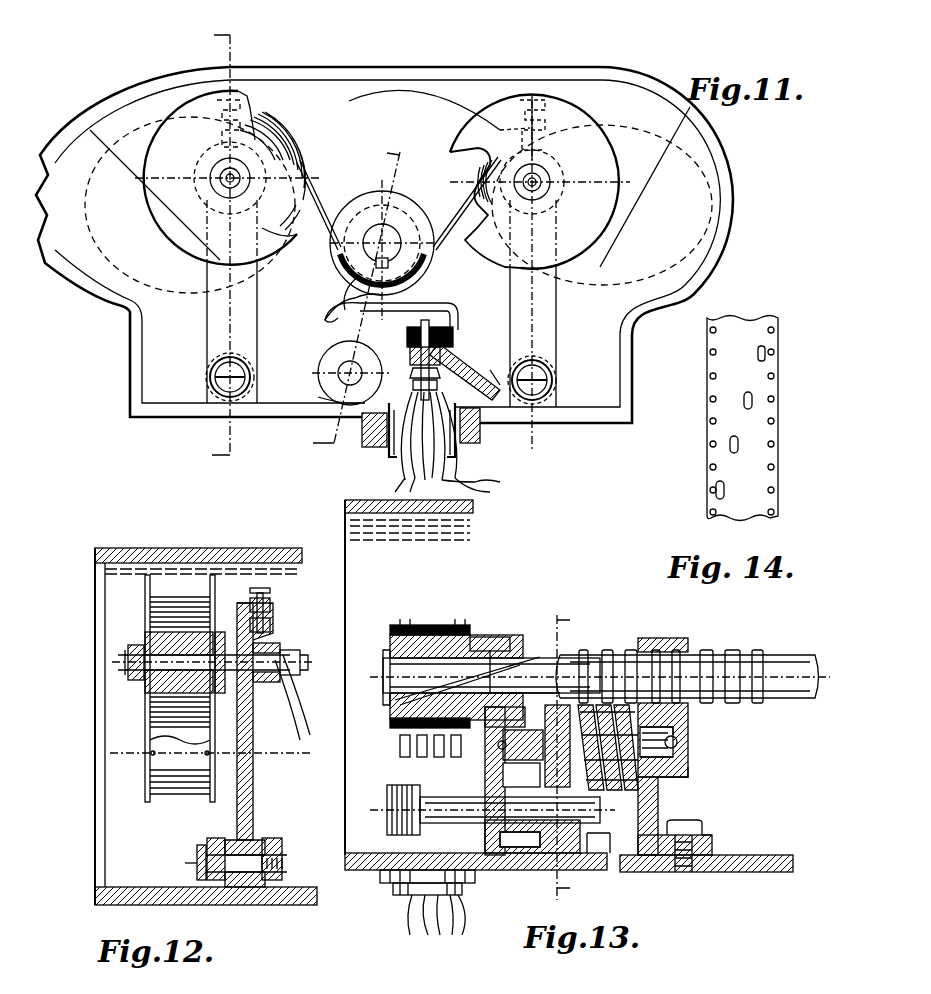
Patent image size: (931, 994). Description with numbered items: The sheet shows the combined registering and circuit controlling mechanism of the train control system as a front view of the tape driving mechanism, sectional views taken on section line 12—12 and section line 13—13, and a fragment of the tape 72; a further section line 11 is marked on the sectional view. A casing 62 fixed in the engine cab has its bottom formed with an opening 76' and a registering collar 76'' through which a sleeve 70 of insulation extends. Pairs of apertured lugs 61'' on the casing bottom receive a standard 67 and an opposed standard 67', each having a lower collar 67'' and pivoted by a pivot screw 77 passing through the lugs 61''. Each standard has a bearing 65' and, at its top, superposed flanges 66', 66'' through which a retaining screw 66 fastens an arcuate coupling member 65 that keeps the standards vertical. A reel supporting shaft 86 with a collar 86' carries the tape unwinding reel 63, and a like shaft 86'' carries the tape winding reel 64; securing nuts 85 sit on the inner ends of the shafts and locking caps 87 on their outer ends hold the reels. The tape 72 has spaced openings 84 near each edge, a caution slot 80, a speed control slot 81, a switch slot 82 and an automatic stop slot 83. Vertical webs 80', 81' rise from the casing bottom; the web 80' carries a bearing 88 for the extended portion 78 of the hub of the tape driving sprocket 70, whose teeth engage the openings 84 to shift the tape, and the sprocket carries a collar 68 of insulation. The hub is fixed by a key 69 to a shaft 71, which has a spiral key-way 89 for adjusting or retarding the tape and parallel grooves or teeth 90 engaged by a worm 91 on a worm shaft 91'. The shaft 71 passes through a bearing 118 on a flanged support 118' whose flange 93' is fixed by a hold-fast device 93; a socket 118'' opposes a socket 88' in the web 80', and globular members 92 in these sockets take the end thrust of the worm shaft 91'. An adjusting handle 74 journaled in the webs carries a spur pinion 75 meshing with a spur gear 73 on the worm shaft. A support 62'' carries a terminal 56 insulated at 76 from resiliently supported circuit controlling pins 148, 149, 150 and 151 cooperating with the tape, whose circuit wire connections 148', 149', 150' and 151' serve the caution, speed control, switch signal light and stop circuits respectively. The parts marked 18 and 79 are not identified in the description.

In FIG. 13, the section line 11- 11 is at (574, 755).
In FIG. 11, the section line 12— 12 is at (209, 245).
In FIG. 11, the section line 13— 13 is at (346, 297).
In FIG. 13, the drive shaft 18 is at (383, 680).
In FIG. 11, the terminal 56 is at (468, 372).
In FIG. 11, the apertured lugs 61'' is at (406, 378).
In FIG. 12, the apertured lugs 61'' is at (268, 842).
In FIG. 11, the casing 62 is at (384, 250).
In FIG. 12, the casing 62 is at (206, 705).
In FIG. 13, the casing 62 is at (576, 686).
In FIG. 11, the support 62'' is at (519, 350).
In FIG. 11, the tape unwinding reel 63 is at (190, 115).
In FIG. 12, the tape unwinding reel 63 is at (145, 583).
In FIG. 11, the tape winding reel 64 is at (600, 120).
In FIG. 11, the arcuate shaped coupling member 65 is at (439, 83).
In FIG. 12, the arcuate shaped coupling member 65 is at (224, 640).
In FIG. 12, the bearing 65' is at (282, 681).
In FIG. 11, the retaining screw 66 is at (556, 99).
In FIG. 12, the retaining screw 66 is at (284, 599).
In FIG. 12, the flange 66' is at (286, 598).
In FIG. 12, the flange 66'' is at (244, 604).
In FIG. 11, the standard 67 is at (251, 332).
In FIG. 12, the standard 67 is at (285, 814).
In FIG. 11, the standard 67' is at (560, 336).
In FIG. 12, the collar 67'' is at (245, 901).
In FIG. 11, the collar of insulation 68 is at (358, 196).
In FIG. 13, the collar of insulation 68 is at (392, 625).
In FIG. 11, the key 69 is at (425, 235).
In FIG. 13, the key 69 is at (390, 708).
In FIG. 11, the tape driving sprocket 70 is at (435, 292).
In FIG. 13, the tape driving sprocket 70 is at (420, 625).
In FIG. 11, the shaft 71 is at (398, 228).
In FIG. 13, the shaft 71 is at (536, 650).
In FIG. 11, the tape 72 is at (485, 175).
In FIG. 14, the tape 72 is at (742, 325).
In FIG. 12, the tape 72 is at (178, 603).
In FIG. 11, the spur gear 73 is at (340, 306).
In FIG. 13, the spur gear 73 is at (548, 768).
In FIG. 11, the adjusting handle 74 is at (330, 362).
In FIG. 13, the adjusting handle 74 is at (385, 808).
In FIG. 11, the spur pinion 75 is at (305, 410).
In FIG. 13, the spur pinion 75 is at (540, 842).
In FIG. 11, the insulation 76 is at (458, 399).
In FIG. 13, the insulation 76 is at (419, 907).
In FIG. 11, the opening 76' is at (371, 445).
In FIG. 11, the collar 76'' is at (495, 429).
In FIG. 11, the pivot screw 77 is at (214, 370).
In FIG. 12, the pivot screw 77 is at (198, 858).
In FIG. 13, the pivot screw 77 is at (388, 650).
In FIG. 13, the extended portion of hub 78 is at (510, 635).
In FIG. 11, the reel hub 79 is at (217, 175).
In FIG. 14, the caution slot 80 is at (791, 351).
In FIG. 13, the vertical web 80' is at (498, 767).
In FIG. 14, the speed control slot 81 is at (784, 395).
In FIG. 13, the vertical web 81' is at (602, 841).
In FIG. 14, the switch slot 82 is at (740, 444).
In FIG. 14, the automatic stop slot 83 is at (726, 490).
In FIG. 14, the spaced openings 84 is at (708, 352).
In FIG. 12, the securing nuts 85 is at (292, 660).
In FIG. 12, the reel supporting shaft 86 is at (260, 721).
In FIG. 12, the collar 86' is at (221, 648).
In FIG. 11, the reel supporting shaft 86'' is at (426, 171).
In FIG. 12, the locking cap 87 is at (137, 648).
In FIG. 13, the bearing 88 is at (467, 644).
In FIG. 13, the socket 88' is at (520, 683).
In FIG. 13, the spiral key-way 89 is at (490, 640).
In FIG. 13, the parallel grooves or teeth 90 is at (610, 650).
In FIG. 13, the worm 91 is at (676, 735).
In FIG. 13, the worm shaft 91' is at (680, 721).
In FIG. 13, the globular members 92 is at (678, 740).
In FIG. 13, the hold-fast device 93 is at (717, 832).
In FIG. 13, the flange 93' is at (728, 840).
In FIG. 13, the bearing 118 is at (677, 689).
In FIG. 13, the flanged support 118' is at (699, 770).
In FIG. 13, the socket 118'' is at (690, 753).
In FIG. 13, the circuit controlling pin 148 is at (471, 750).
In FIG. 11, the circuit wire connection 148' is at (484, 483).
In FIG. 13, the circuit controlling pin 149 is at (448, 761).
In FIG. 11, the circuit wire connection 149' is at (484, 493).
In FIG. 13, the circuit controlling pin 150 is at (418, 761).
In FIG. 11, the circuit wire connection 150' is at (392, 489).
In FIG. 13, the circuit controlling pin 151 is at (381, 744).
In FIG. 11, the circuit wire connection 151' is at (366, 487).